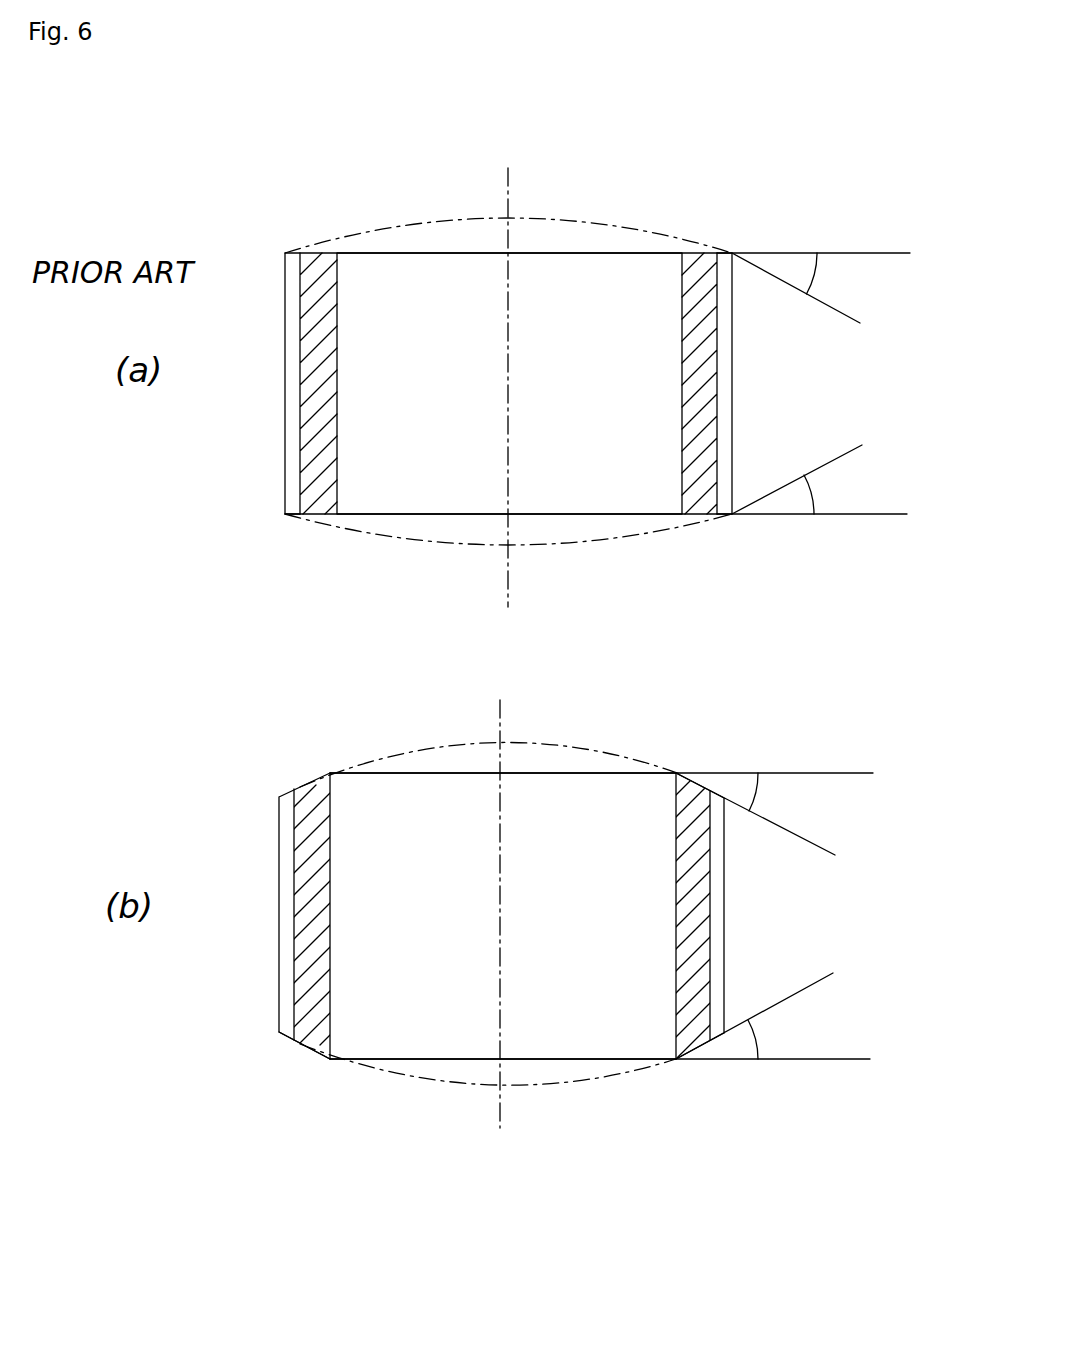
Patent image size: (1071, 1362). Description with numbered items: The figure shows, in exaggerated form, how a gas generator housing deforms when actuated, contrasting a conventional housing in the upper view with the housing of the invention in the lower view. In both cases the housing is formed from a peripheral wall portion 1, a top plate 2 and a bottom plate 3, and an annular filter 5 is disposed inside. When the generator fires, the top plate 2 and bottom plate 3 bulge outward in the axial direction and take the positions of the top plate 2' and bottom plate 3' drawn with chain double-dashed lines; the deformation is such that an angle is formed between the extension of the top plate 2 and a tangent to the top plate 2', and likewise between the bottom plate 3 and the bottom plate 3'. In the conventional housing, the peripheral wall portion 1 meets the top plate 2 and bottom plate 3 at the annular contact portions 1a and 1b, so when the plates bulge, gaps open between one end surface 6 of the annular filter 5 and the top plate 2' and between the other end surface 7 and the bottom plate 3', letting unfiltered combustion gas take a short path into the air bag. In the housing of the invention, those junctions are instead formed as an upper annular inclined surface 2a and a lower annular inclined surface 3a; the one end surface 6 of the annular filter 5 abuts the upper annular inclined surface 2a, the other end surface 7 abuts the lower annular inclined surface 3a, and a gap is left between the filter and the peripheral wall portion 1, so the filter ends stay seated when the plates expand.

The peripheral wall portion 1 is at (732, 332).
The annular contact portion 1a is at (732, 253).
The annular contact portion 1b is at (732, 515).
The top plate 2 is at (506, 457).
The top plate 2' is at (508, 451).
The upper annular inclined surface 2a is at (700, 784).
The bottom plate 3 is at (506, 848).
The bottom plate 3' is at (508, 850).
The lower annular inclined surface 3a is at (695, 1052).
The annular filter 5 is at (705, 415).
The one end surface 6 is at (318, 250).
The other end surface 7 is at (313, 517).